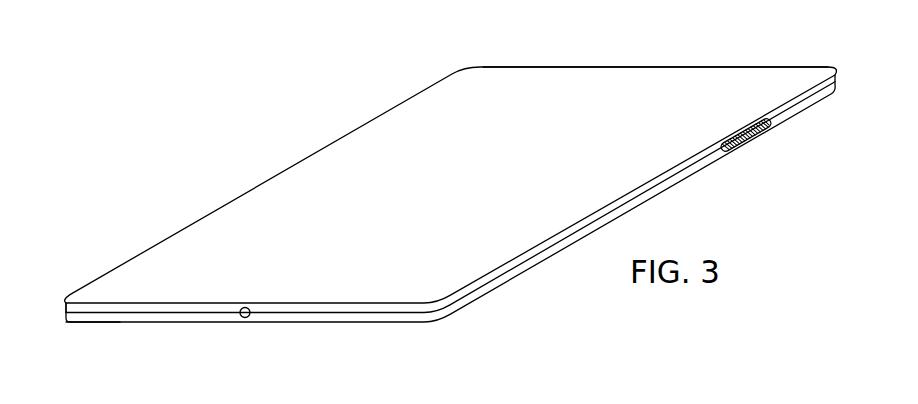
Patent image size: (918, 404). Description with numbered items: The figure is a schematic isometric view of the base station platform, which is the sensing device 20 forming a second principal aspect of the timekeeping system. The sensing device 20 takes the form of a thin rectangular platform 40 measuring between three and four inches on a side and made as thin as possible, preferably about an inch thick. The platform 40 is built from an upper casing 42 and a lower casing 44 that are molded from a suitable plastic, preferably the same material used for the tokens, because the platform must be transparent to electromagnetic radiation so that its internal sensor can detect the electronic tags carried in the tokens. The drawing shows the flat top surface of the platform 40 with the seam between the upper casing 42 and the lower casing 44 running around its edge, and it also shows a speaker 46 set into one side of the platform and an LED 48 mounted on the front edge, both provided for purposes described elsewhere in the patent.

The sensing device 20 is at (253, 195).
The platform 40 is at (599, 68).
The upper casing 42 is at (66, 310).
The lower casing 44 is at (87, 323).
The speaker 46 is at (753, 137).
The LED 48 is at (245, 318).